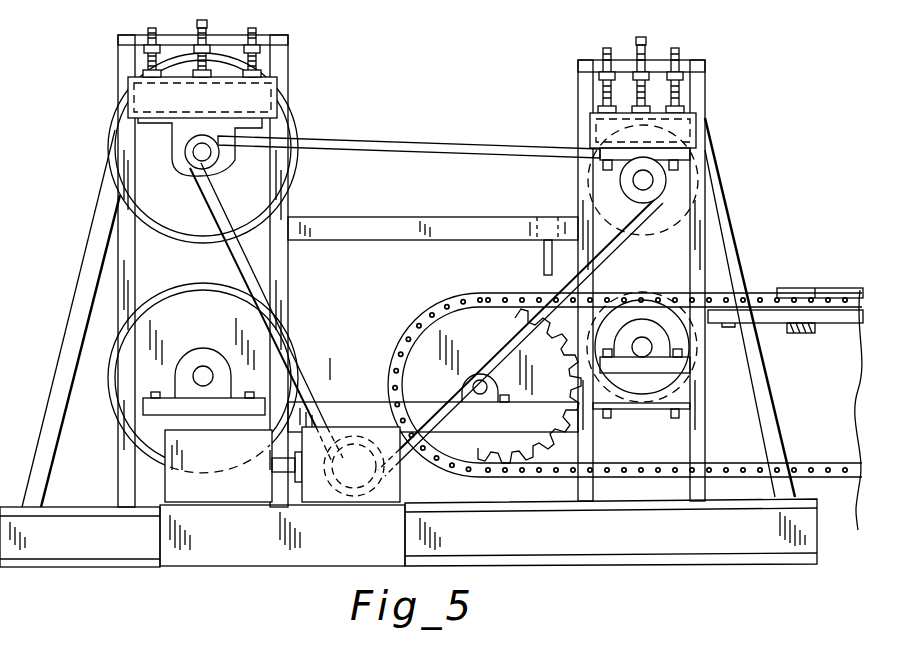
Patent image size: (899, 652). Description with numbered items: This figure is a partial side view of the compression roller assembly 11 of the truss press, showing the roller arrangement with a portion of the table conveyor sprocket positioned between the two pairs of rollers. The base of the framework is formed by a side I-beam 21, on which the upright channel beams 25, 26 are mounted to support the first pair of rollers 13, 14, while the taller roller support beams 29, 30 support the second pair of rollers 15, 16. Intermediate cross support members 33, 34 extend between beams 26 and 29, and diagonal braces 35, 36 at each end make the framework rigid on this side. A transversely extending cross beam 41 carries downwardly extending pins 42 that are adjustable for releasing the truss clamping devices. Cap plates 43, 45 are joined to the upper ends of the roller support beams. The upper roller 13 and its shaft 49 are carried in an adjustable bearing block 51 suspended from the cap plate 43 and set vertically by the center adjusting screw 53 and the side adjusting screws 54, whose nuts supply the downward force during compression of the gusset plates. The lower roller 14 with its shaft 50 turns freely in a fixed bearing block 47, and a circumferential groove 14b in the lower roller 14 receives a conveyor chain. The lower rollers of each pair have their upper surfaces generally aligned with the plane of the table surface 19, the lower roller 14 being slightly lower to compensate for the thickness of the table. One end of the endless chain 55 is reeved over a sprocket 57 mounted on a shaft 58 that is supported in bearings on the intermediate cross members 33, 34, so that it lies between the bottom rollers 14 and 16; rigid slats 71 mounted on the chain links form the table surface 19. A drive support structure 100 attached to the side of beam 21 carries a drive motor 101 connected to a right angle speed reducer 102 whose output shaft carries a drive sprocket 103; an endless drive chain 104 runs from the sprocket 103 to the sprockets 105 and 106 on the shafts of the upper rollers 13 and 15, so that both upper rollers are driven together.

The compression roller assembly 11 is at (113, 575).
The drive support structure 100 is at (252, 556).
The I-beam 21 is at (692, 542).
The upper roller of second pair 15 is at (110, 128).
The lower roller of second pair 16 is at (114, 392).
The roller support beam 30 is at (128, 62).
The cap plate 45 is at (290, 48).
The diagonal brace 36 is at (72, 316).
The roller support beam 29 is at (282, 90).
The sprocket 106 is at (202, 157).
The endless drive chain 104 is at (452, 142).
The intermediate cross support member 33 is at (386, 232).
The transversely extending cross beam 41 is at (548, 212).
The downwardly extending pin 42 is at (545, 258).
The intermediate cross support member 34 is at (356, 410).
The sprocket 57 is at (450, 298).
The shaft 58 is at (492, 372).
The drive motor 101 is at (248, 480).
The drive sprocket 103 is at (342, 490).
The right angle speed reducer 102 is at (380, 480).
The sprocket 105 is at (640, 197).
The channel beam 26 is at (580, 95).
The channel beam 25 is at (705, 100).
The cap plate 43 is at (704, 62).
The diagonal brace 35 is at (777, 408).
The side adjusting screw 54 is at (606, 50).
The center adjusting screw 53 is at (640, 36).
The adjustable bearing block 51 is at (700, 130).
The upper roller of first pair 13 is at (690, 186).
The shaft 49 is at (648, 182).
The lower roller of first pair 14 is at (650, 300).
The circumferential groove 14b is at (620, 282).
The shaft 50 is at (655, 350).
The fixed bearing block 47 is at (660, 410).
The table surface 19 is at (842, 288).
The rigid slat 71 is at (800, 290).
The endless chain 55 is at (848, 475).